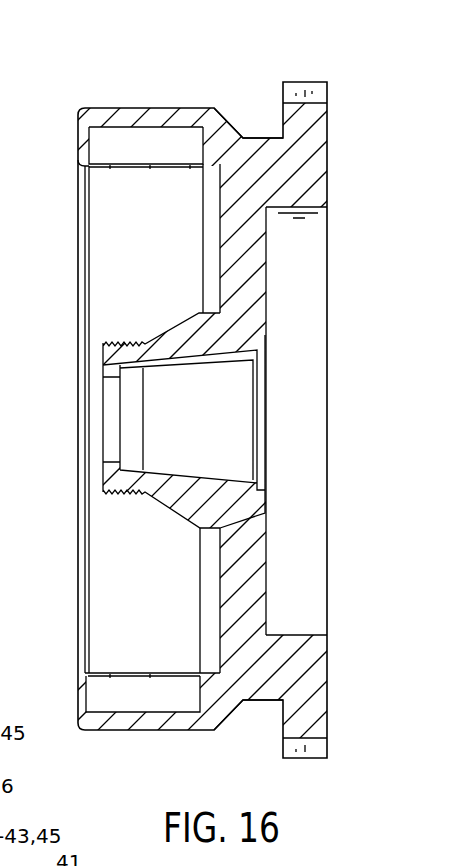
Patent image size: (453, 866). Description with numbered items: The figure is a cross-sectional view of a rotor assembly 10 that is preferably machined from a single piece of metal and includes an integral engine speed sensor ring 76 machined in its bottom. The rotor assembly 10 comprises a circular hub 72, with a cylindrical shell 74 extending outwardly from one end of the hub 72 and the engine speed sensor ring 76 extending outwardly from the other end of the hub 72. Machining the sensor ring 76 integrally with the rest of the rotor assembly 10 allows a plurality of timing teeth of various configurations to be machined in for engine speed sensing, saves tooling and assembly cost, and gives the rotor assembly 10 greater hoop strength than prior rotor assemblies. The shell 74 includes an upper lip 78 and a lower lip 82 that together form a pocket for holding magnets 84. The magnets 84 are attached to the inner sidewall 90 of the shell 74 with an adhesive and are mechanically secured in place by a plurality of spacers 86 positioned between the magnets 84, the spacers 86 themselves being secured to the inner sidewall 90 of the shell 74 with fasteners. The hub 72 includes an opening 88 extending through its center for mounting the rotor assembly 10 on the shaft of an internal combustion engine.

The coupling assembly 10 is at (56, 224).
The circular hub 72 is at (253, 700).
The cylindrical shell 74 is at (158, 730).
The engine speed sensor ring 76 is at (315, 169).
The upper lip 78 is at (82, 136).
The lower lip 82 is at (207, 143).
The magnets 84 is at (133, 147).
The spacers 86 is at (101, 697).
The opening 88 is at (215, 422).
The inner sidewall 90 is at (136, 132).